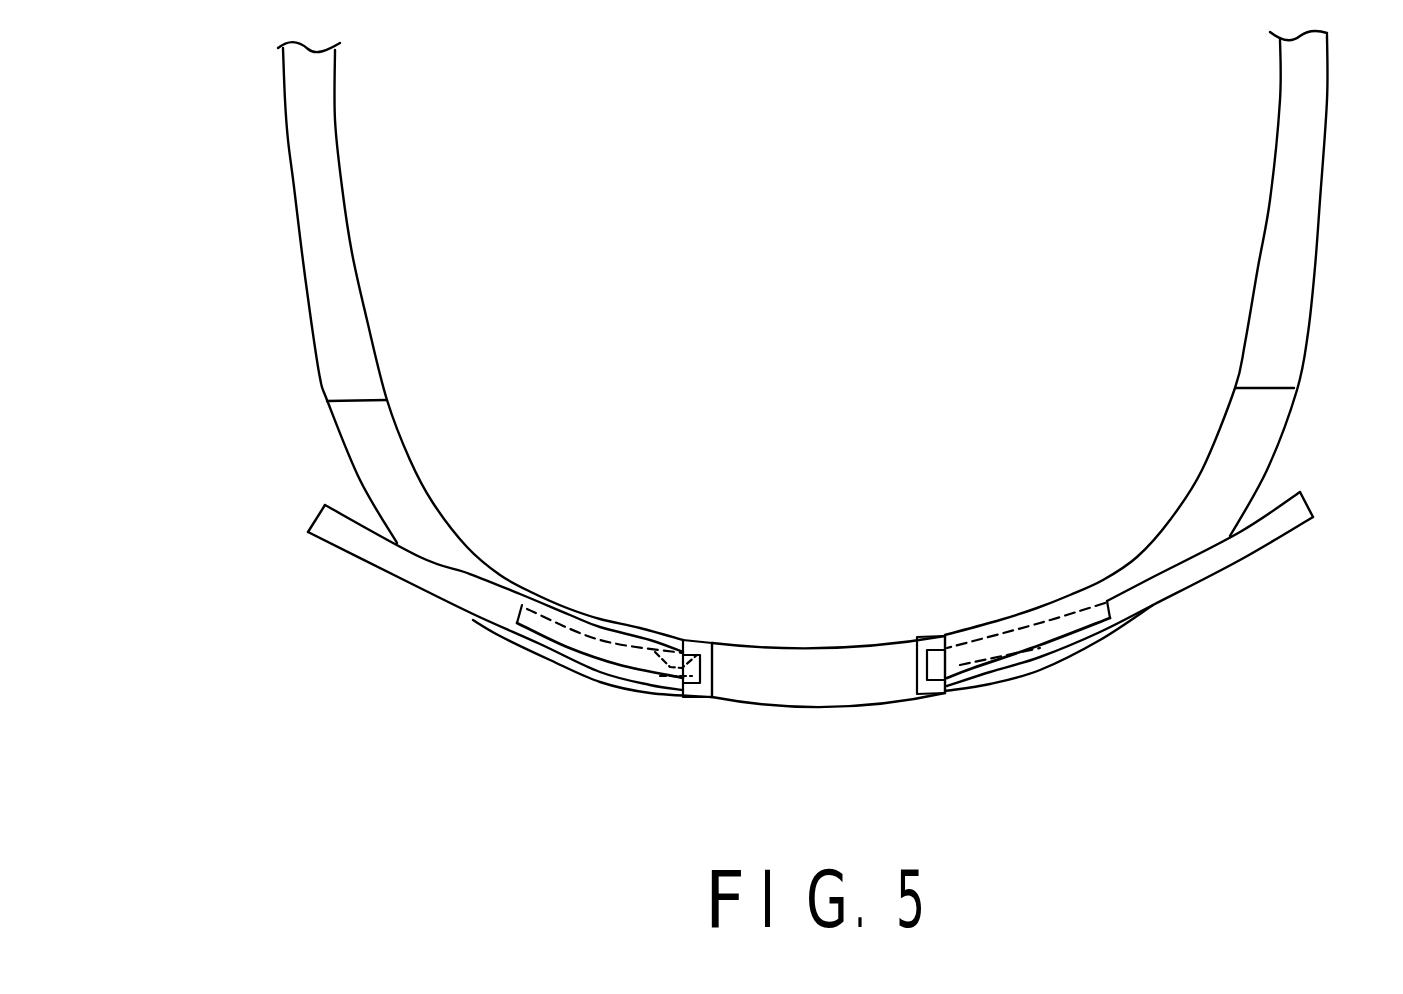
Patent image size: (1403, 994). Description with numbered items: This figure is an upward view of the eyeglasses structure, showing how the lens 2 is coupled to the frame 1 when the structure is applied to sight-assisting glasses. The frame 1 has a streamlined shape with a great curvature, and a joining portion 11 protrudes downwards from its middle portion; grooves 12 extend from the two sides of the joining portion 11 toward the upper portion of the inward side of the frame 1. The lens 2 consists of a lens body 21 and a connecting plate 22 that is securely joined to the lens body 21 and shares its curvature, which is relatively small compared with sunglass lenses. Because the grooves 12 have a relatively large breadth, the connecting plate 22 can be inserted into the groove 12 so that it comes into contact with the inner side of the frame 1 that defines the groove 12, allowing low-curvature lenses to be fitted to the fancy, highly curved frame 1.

The frame 1 is at (1282, 347).
The joining portion 11 is at (867, 685).
The groove 12 is at (710, 643).
The lens 2 is at (745, 642).
The lens body 21 is at (370, 557).
The connecting plate 22 is at (636, 658).